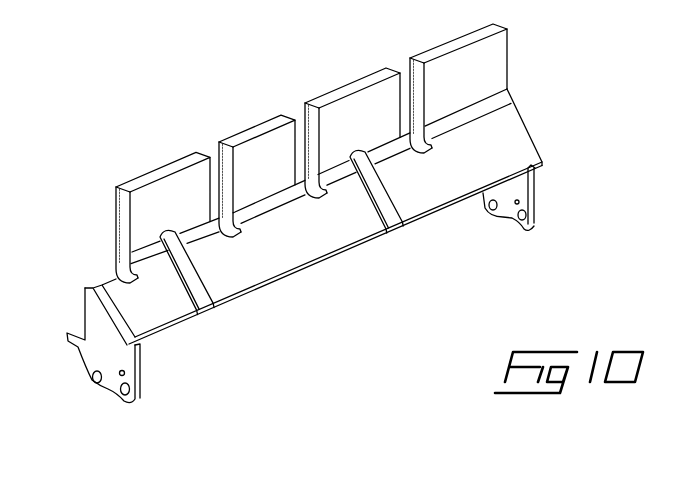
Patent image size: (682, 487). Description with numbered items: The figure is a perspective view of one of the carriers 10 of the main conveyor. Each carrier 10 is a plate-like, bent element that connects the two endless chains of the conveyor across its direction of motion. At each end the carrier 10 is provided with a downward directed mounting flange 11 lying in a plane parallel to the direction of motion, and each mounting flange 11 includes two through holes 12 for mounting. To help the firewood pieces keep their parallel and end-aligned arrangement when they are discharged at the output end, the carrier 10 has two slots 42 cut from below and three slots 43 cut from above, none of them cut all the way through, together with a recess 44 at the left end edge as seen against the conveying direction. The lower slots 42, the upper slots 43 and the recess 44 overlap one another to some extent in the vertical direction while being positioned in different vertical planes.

The carrier 10 is at (525, 55).
The mounting flange 11 is at (95, 328).
The through hole 12 is at (95, 378).
The lower slot 42 is at (197, 303).
The upper slot 43 is at (217, 134).
The recess 44 is at (110, 240).